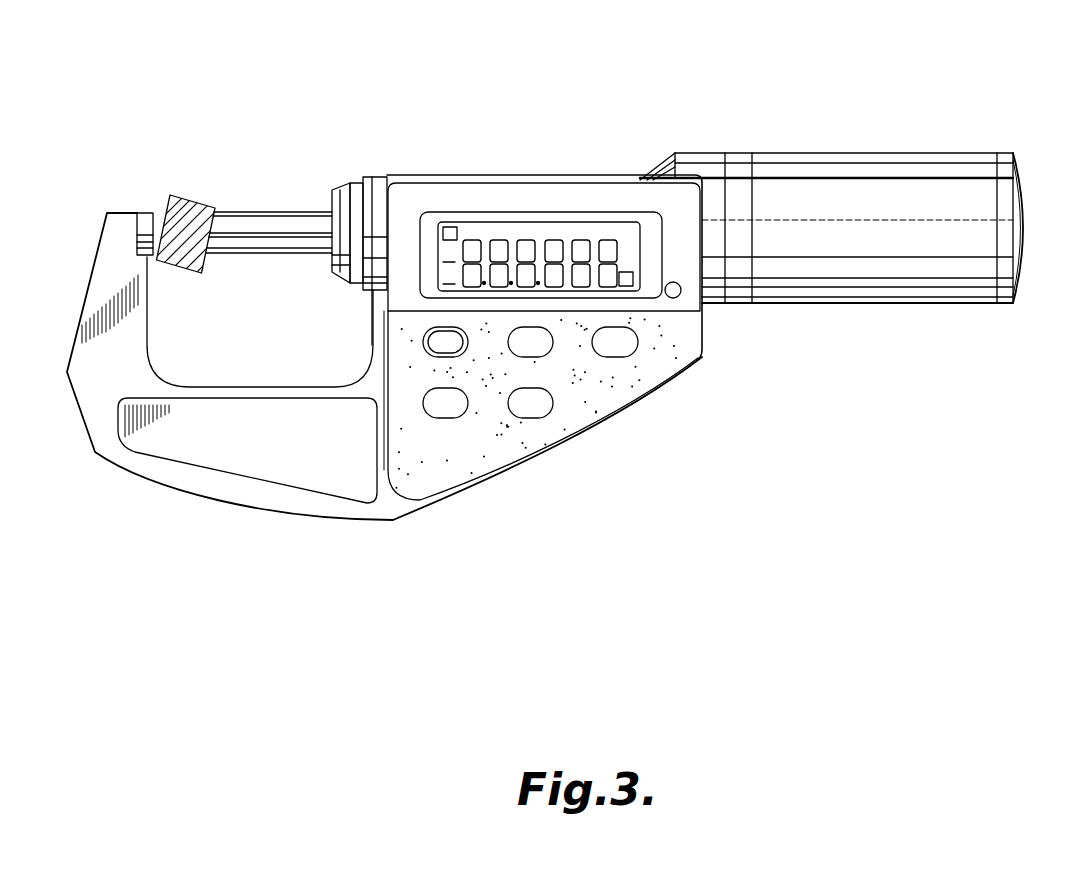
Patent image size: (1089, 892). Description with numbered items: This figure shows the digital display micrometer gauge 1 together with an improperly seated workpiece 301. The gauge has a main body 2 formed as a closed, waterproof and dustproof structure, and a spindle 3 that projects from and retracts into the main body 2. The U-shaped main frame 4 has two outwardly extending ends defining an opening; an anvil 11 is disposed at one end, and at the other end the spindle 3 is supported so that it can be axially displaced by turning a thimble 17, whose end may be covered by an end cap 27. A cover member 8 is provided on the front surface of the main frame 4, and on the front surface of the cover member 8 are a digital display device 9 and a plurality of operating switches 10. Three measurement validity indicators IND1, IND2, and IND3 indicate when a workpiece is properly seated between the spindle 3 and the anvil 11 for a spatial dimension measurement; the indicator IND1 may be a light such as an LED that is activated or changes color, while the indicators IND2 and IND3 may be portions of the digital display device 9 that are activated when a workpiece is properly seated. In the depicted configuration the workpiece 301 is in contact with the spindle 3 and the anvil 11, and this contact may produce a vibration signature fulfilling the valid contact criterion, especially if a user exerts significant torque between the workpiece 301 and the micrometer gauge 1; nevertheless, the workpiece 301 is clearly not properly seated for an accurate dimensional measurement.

The digital display micrometer gauge 1 is at (677, 112).
The main body 2 is at (395, 520).
The spindle 3 is at (245, 211).
The U-shaped main frame 4 is at (300, 512).
The cover member 8 is at (662, 370).
The digital display device 9 is at (512, 228).
The operating switches 10 is at (549, 355).
The anvil 11 is at (147, 210).
The thimble 17 is at (873, 173).
The end cap 27 is at (1018, 182).
The workpiece 301 is at (197, 197).
The measurement validity indicator IND1 is at (680, 296).
The measurement validity indicator IND2 is at (441, 234).
The measurement validity indicator IND3 is at (624, 270).